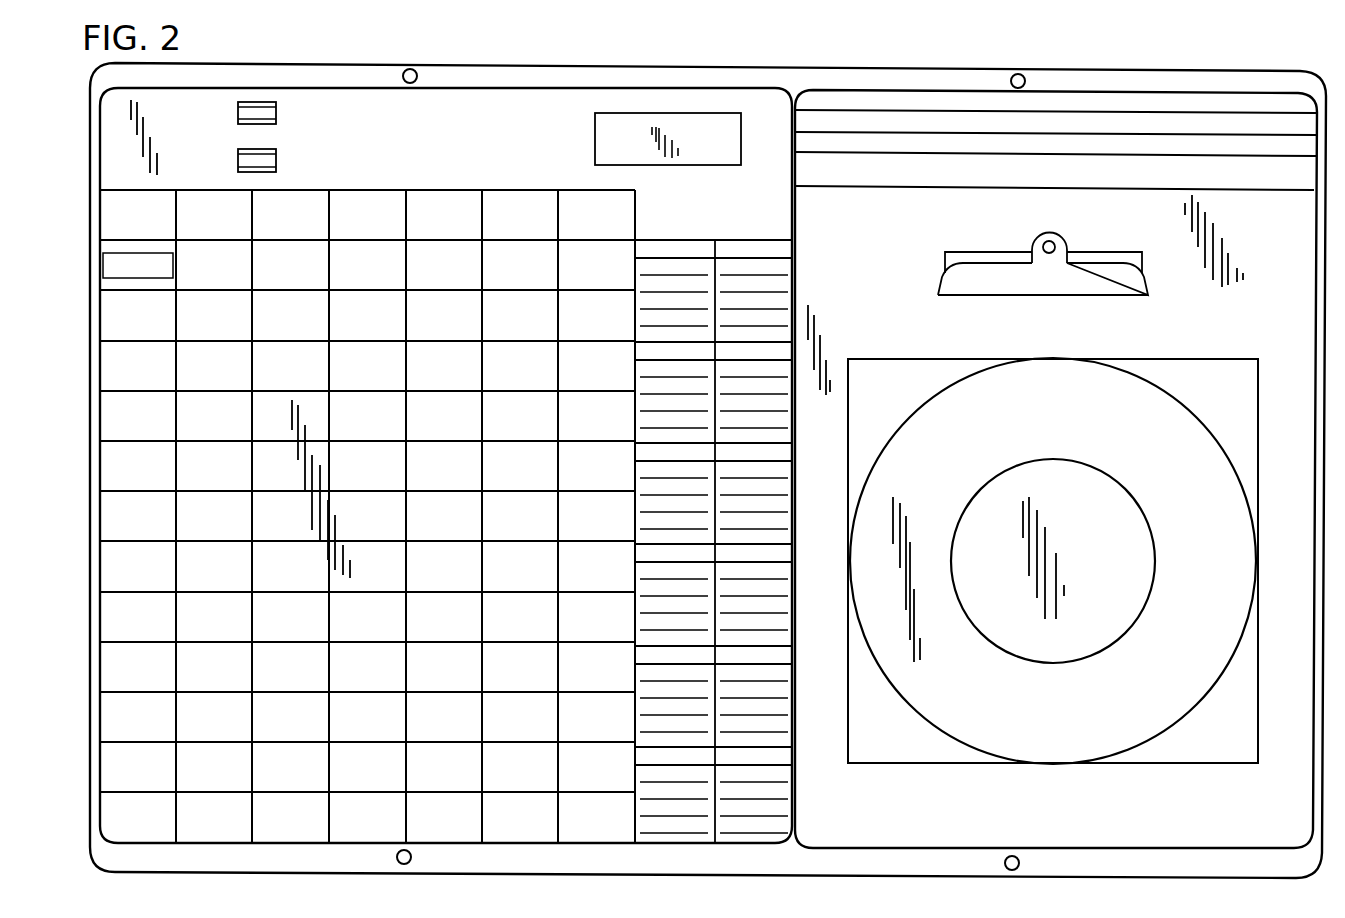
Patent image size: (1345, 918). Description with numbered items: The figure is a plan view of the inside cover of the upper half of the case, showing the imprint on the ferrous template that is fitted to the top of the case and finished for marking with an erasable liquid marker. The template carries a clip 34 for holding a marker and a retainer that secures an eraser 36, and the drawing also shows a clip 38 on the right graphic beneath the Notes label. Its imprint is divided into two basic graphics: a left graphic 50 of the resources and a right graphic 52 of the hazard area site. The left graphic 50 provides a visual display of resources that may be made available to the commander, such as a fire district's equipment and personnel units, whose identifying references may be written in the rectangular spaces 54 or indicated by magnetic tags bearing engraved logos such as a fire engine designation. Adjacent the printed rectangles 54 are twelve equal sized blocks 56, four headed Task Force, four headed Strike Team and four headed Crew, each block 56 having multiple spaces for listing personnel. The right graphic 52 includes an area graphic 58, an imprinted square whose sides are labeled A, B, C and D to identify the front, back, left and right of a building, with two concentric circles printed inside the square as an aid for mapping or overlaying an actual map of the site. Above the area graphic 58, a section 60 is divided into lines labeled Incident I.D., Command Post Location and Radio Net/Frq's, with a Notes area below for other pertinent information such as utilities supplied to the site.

The clip 34 is at (276, 111).
The eraser 36 is at (595, 146).
The clip 38 is at (1013, 285).
The left graphic 50 is at (769, 207).
The right graphic 52 is at (854, 229).
The rectangular spaces 54 is at (135, 212).
The blocks 56 is at (724, 272).
The area graphic 58 is at (1187, 360).
The section 60 is at (822, 59).